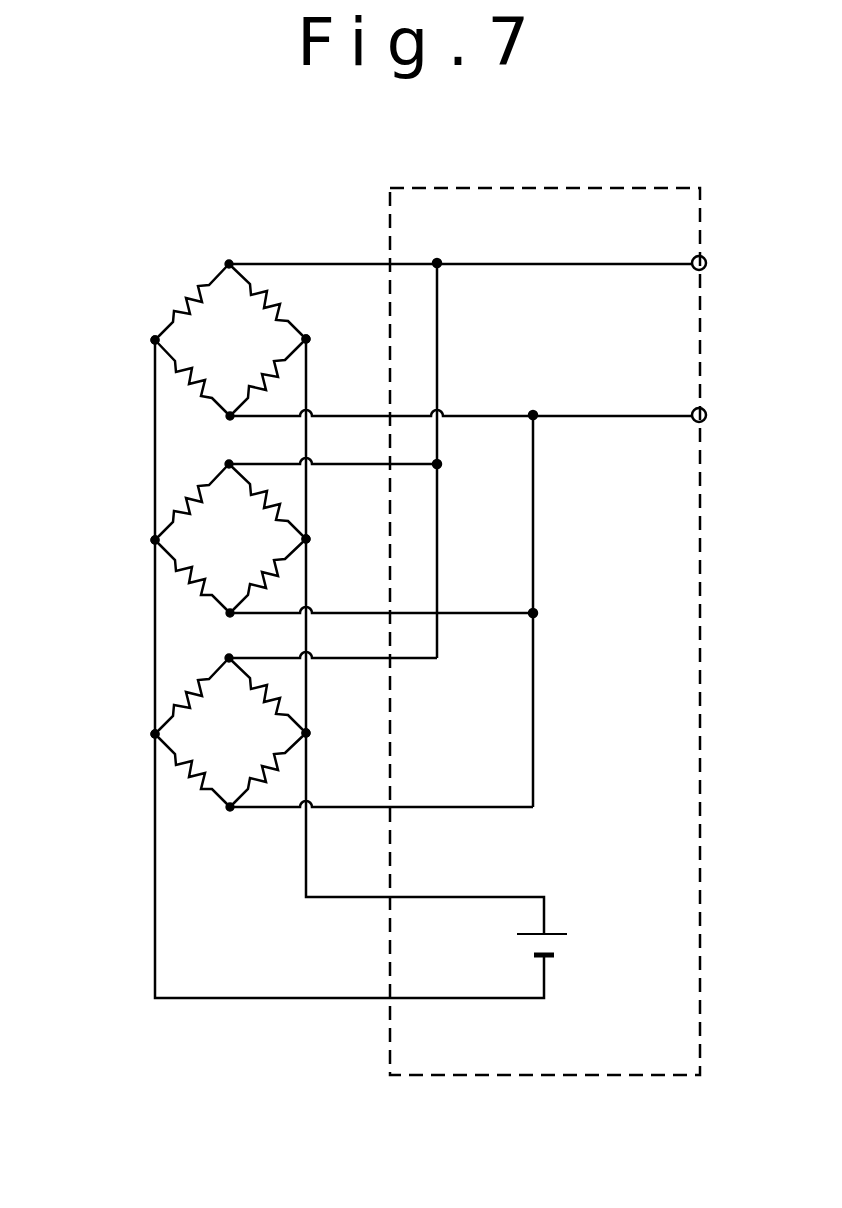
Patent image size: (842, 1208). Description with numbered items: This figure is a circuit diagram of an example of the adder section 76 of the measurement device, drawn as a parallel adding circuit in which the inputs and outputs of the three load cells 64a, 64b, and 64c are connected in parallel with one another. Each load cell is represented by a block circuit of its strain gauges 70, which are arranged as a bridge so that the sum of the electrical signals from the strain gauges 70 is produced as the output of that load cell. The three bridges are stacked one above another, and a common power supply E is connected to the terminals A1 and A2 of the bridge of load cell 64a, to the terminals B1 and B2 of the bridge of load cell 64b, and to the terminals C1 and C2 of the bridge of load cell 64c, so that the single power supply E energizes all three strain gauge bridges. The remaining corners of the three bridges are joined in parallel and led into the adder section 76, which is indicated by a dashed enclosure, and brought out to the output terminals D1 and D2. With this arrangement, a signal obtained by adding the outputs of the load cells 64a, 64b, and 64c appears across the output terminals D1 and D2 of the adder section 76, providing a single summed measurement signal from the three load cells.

The adder section 76 is at (505, 186).
The strain gauges 70 is at (216, 521).
The load cell 64a is at (183, 286).
The load cell 64b is at (128, 520).
The load cell 64c is at (150, 733).
The terminal A1 is at (113, 320).
The terminal A2 is at (310, 335).
The terminal B1 is at (150, 545).
The terminal B2 is at (310, 537).
The terminal C1 is at (150, 740).
The terminal C2 is at (310, 730).
The output terminal D1 is at (707, 260).
The output terminal D2 is at (707, 413).
The common power supply E is at (570, 945).